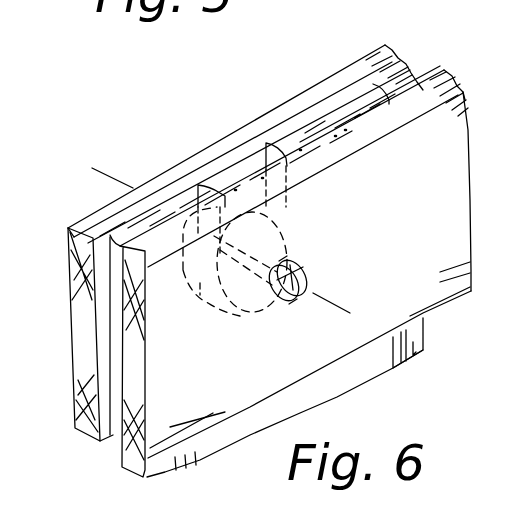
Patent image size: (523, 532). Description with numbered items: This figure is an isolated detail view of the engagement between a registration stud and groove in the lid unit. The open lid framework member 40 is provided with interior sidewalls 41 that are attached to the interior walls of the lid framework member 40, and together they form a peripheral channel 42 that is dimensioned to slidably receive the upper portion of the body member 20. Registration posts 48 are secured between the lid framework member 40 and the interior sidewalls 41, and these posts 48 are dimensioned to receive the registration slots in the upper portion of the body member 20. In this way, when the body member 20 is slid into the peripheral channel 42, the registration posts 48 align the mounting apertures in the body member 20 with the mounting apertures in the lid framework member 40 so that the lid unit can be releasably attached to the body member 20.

The lid framework member 40 is at (214, 136).
The peripheral channel 42 is at (406, 84).
The interior sidewalls 41 is at (436, 197).
The registration posts 48 is at (222, 193).
The body member 20 is at (318, 125).